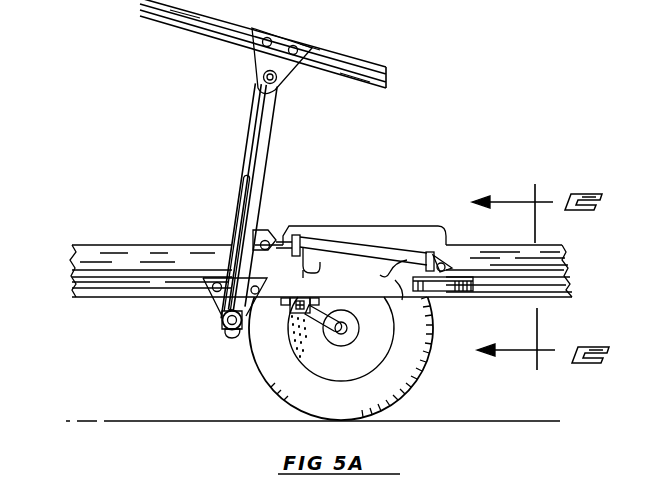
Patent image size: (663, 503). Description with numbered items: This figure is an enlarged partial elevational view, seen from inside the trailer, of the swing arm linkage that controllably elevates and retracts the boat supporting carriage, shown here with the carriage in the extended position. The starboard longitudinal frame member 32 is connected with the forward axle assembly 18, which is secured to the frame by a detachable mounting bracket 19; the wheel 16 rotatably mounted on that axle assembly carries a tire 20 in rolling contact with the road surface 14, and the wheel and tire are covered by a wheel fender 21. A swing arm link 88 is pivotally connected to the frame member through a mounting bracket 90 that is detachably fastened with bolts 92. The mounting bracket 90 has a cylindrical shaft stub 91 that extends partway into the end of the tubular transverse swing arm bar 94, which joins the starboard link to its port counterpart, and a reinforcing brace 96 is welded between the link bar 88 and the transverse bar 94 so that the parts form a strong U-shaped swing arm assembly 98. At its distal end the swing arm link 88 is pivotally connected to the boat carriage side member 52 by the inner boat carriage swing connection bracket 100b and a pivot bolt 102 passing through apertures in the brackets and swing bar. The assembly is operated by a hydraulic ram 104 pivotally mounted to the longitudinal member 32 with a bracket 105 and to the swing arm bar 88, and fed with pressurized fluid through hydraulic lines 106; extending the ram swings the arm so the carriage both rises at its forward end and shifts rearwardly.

The road surface 14 is at (121, 421).
The wheel 16 is at (378, 321).
The axle assembly 18 is at (322, 336).
The detachable mounting bracket 19 is at (296, 338).
The tire 20 is at (422, 376).
The wheel fender 21 is at (437, 224).
The starboard longitudinal frame member 32 is at (100, 250).
The boat carriage side member 52 is at (332, 52).
The swing arm link 88 is at (250, 136).
The mounting bracket 90 is at (212, 300).
The cylindrical shaft stub 91 is at (228, 336).
The bolt 92 is at (215, 283).
The transverse swing arm bar 94 is at (244, 325).
The reinforcing brace 96 is at (247, 186).
The swing arm assembly 98 is at (289, 186).
The inner boat carriage swing connection bracket 100b is at (256, 58).
The pivot bolt 102 is at (278, 82).
The hydraulic ram 104 is at (368, 243).
The bracket 105 is at (473, 293).
The hydraulic line 106 is at (320, 243).